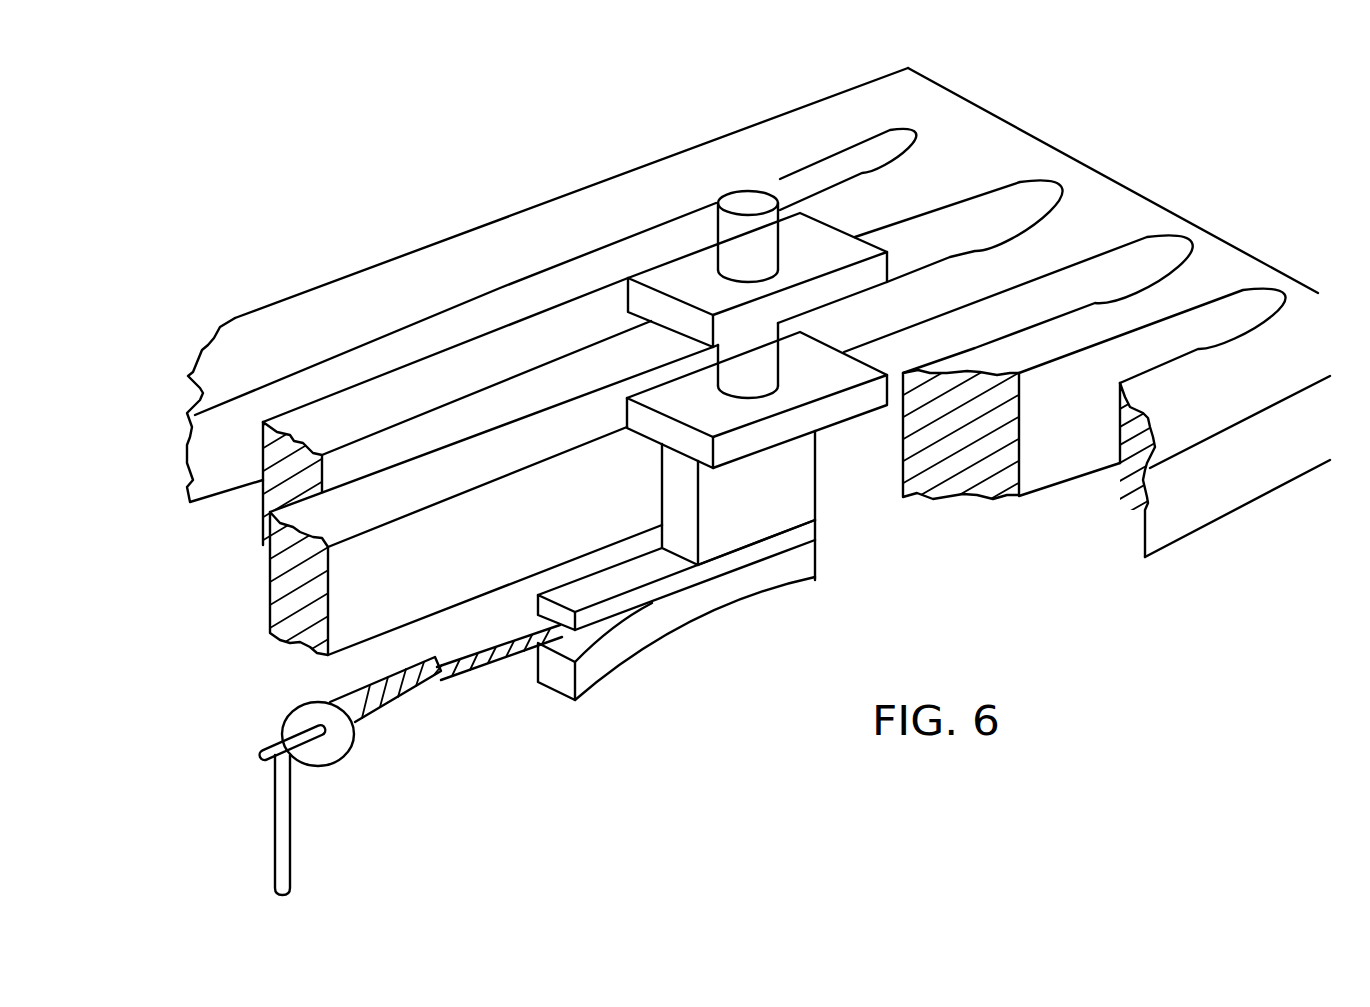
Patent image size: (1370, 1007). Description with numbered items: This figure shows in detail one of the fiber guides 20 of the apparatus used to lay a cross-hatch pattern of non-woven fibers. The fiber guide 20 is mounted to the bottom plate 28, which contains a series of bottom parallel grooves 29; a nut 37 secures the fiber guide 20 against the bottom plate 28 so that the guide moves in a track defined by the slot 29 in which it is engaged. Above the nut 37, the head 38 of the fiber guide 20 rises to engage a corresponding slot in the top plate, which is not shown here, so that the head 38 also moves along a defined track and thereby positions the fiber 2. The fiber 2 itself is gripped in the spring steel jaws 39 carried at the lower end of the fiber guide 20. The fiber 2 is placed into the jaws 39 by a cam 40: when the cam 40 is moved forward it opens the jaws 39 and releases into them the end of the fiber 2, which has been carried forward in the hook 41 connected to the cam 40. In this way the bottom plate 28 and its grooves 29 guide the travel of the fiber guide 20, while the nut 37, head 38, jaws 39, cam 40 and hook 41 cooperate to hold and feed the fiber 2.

The bottom plate 28 is at (1093, 221).
The bottom parallel grooves 29 is at (1145, 351).
The head 38 is at (732, 230).
The nut 37 is at (853, 416).
The fiber guide 20 is at (778, 498).
The spring steel jaws 39 is at (605, 658).
The fiber 2 is at (453, 678).
The cam 40 is at (357, 690).
The hook 41 is at (347, 752).